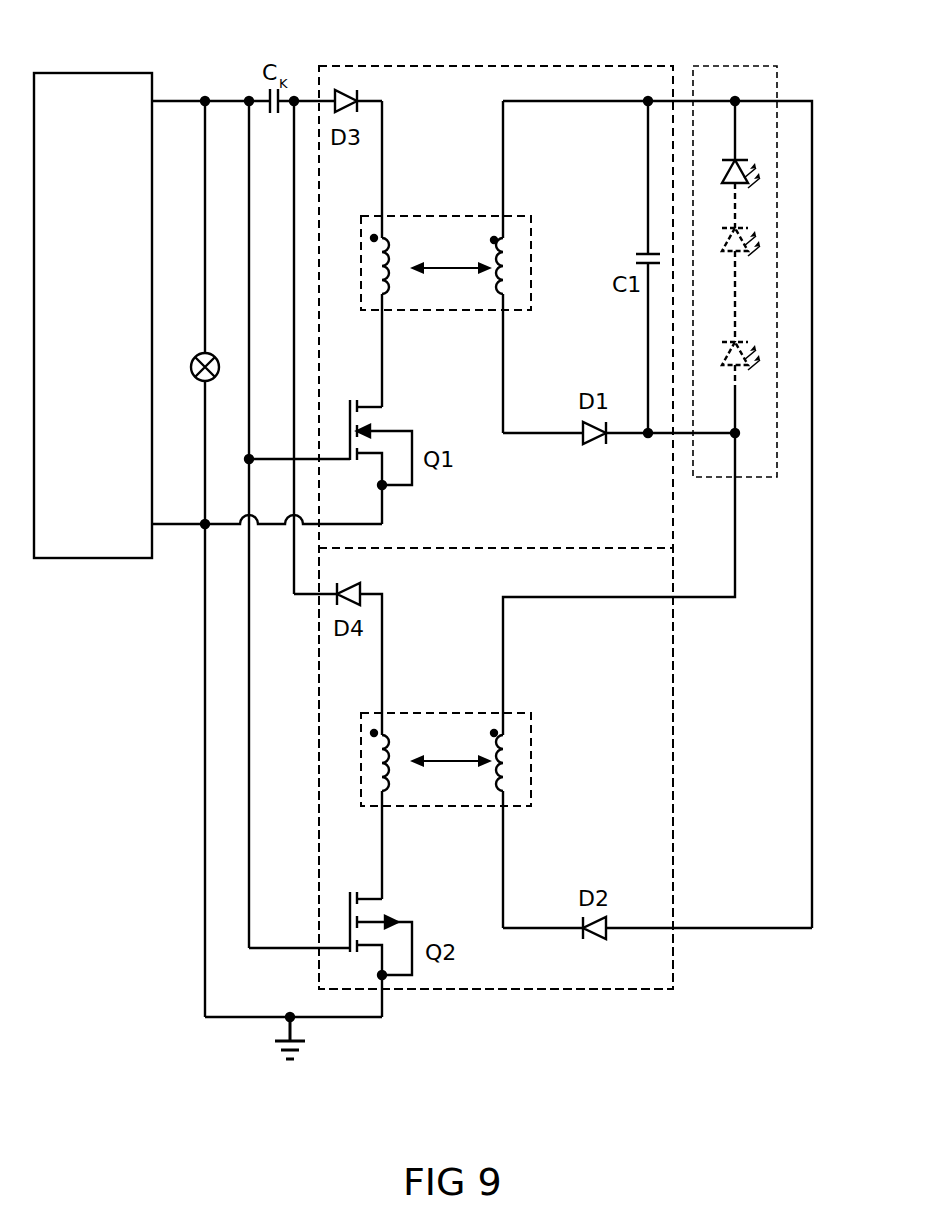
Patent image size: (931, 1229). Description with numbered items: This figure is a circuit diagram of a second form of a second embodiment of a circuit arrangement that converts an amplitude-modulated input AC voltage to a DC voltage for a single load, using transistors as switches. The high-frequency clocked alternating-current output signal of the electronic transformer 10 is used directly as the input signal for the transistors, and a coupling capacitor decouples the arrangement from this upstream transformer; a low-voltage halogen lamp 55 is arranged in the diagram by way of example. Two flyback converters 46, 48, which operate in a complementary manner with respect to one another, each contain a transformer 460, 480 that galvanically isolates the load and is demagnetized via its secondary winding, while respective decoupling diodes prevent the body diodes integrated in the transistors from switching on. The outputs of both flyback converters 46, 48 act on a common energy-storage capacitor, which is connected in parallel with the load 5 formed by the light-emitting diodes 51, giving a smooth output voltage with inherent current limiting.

The electronic transformer 10 is at (110, 316).
The low-voltage halogen lamp 55 is at (218, 357).
The flyback converter 46 is at (590, 66).
The transformer 460 is at (443, 216).
The transformer 480 is at (437, 713).
The flyback converter 48 is at (522, 990).
The load 5 is at (778, 91).
The light-emitting diodes 51 is at (737, 160).